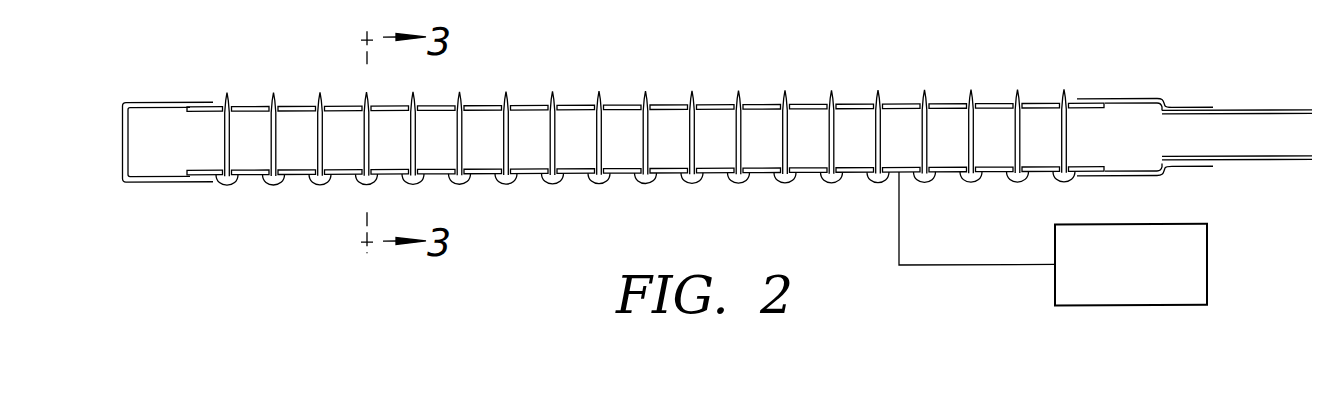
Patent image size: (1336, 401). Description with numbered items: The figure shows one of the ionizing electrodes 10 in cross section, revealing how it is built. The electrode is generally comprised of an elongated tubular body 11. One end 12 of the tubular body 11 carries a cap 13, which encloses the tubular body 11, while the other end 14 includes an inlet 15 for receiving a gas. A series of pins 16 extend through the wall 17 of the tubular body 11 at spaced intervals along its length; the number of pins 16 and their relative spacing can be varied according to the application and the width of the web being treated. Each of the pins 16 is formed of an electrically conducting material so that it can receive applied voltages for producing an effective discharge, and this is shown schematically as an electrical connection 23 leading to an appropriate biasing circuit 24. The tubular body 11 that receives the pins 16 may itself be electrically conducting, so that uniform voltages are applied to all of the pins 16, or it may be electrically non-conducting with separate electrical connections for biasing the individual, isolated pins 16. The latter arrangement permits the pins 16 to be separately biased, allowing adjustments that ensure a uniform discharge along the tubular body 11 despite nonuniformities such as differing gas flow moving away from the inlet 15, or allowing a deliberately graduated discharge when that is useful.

The ionizing electrode 10 is at (246, 90).
The tubular body 11 is at (628, 192).
The end 12 is at (209, 172).
The cap 13 is at (152, 182).
The other end 14 is at (1132, 102).
The inlet 15 is at (1253, 114).
The pins 16 is at (785, 92).
The wall 17 is at (573, 105).
The electrical connection 23 is at (899, 238).
The biasing circuit 24 is at (1207, 278).